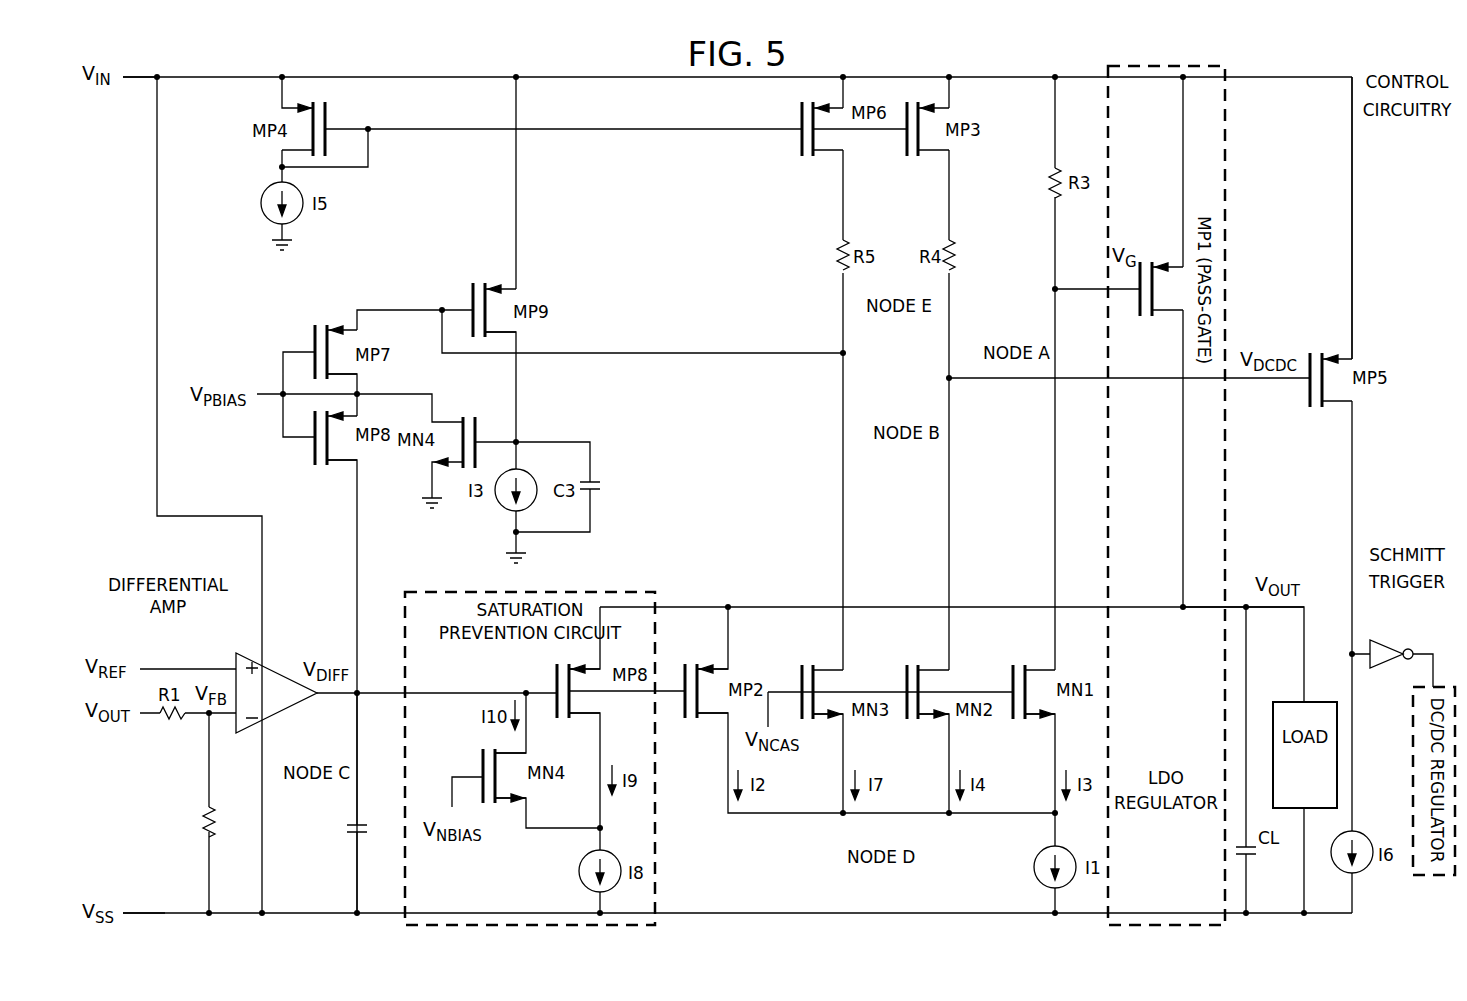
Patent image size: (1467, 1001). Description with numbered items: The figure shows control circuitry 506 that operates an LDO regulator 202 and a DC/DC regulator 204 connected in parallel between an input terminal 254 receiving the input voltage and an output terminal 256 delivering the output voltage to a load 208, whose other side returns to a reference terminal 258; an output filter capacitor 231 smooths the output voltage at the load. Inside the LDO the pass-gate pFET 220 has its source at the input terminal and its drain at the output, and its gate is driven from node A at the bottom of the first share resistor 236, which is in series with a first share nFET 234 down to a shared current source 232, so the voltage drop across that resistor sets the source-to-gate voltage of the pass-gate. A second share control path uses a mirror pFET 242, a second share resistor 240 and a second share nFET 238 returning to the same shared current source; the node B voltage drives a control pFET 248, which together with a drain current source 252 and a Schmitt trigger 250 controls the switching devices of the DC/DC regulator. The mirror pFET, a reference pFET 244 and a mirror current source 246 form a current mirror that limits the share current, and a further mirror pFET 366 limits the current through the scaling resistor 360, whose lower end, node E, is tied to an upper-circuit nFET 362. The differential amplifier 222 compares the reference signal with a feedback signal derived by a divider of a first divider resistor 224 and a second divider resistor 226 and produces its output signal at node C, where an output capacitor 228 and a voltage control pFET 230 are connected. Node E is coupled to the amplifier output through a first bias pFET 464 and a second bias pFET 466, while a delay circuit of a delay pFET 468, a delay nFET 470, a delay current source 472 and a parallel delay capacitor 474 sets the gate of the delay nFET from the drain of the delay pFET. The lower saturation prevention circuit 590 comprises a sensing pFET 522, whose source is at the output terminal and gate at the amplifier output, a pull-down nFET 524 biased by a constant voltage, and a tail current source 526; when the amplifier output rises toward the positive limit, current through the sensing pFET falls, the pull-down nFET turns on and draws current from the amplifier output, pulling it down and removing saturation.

The input terminal 254 is at (131, 78).
The pFET MP4 244 is at (328, 121).
The current source I2 246 is at (261, 203).
The pFET MP6 366 is at (801, 156).
The resistor R5 360 is at (838, 255).
The pFET MP3 242 is at (906, 156).
The resistor R4 240 is at (955, 256).
The resistor R3 236 is at (1051, 181).
The pFET MP1 220 is at (1146, 314).
The pFET MP5 248 is at (1308, 391).
The control circuitry 506 is at (1383, 197).
The pFET MP9 468 is at (470, 300).
The pFET MP7 464 is at (313, 342).
The pFET MP8 466 is at (313, 451).
The nFET MN4 470 is at (478, 430).
The current source I3 472 is at (504, 513).
The capacitor C3 474 is at (602, 490).
The differential amplifier 222 is at (240, 651).
The resistor R1 224 is at (169, 719).
The resistor R2 226 is at (205, 820).
The capacitor C1 228 is at (344, 826).
The reference terminal 258 is at (164, 913).
The saturation prevention circuit 590 is at (657, 818).
The pFET MP8 522 is at (555, 680).
The nFET MN4 524 is at (482, 768).
The current source I8 526 is at (579, 868).
The pFET MP2 230 is at (685, 717).
The nFET MN3 362 is at (797, 677).
The nFET MN2 238 is at (903, 677).
The nFET MN1 234 is at (1010, 677).
The current source I1 232 is at (1035, 868).
The LDO regulator 202 is at (1145, 849).
The output terminal 256 is at (1251, 612).
The load 208 is at (1285, 784).
The output filter capacitor CL 231 is at (1254, 856).
The current source I5 252 is at (1367, 869).
The Schmitt trigger 250 is at (1387, 642).
The DC/DC regulator 204 is at (1413, 769).